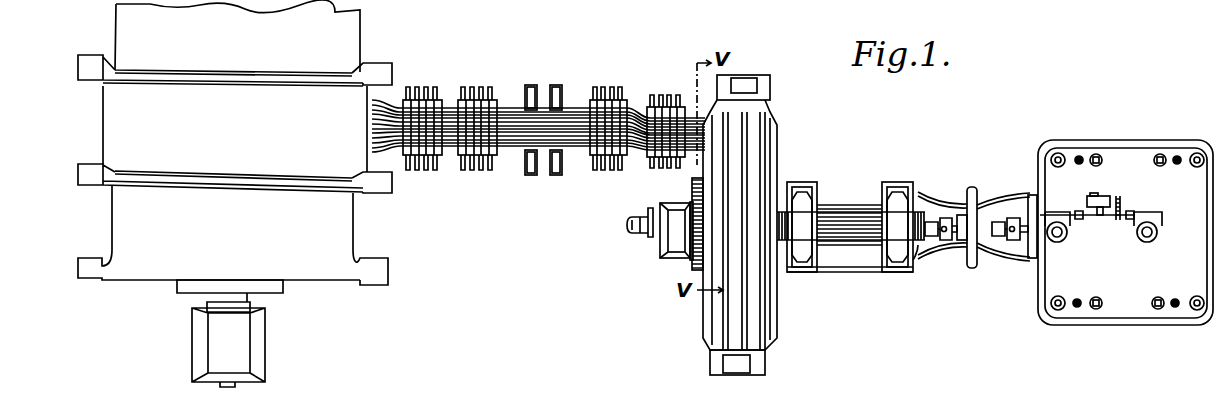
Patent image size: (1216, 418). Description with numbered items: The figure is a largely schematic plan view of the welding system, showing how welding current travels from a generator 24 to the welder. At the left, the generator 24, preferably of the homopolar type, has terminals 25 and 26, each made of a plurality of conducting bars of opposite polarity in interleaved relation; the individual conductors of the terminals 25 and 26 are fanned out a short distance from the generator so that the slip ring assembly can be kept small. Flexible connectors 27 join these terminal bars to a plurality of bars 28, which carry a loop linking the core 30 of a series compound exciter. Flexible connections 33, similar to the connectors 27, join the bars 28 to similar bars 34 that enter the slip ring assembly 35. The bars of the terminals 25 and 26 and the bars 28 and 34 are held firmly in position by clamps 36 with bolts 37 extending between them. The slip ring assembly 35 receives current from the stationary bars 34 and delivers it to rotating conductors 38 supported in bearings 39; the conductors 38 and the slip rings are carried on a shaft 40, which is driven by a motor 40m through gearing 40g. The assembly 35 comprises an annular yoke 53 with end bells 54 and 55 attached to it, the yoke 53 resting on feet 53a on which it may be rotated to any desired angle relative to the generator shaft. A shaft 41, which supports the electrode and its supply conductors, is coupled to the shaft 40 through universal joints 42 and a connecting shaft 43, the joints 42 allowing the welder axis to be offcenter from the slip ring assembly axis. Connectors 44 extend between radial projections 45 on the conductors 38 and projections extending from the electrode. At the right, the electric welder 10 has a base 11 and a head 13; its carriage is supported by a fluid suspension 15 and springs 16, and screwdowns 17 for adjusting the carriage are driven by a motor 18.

The electric welder 10 is at (1066, 126).
The base 11 is at (1174, 136).
The head 13 is at (1110, 153).
The fluid suspension 15 is at (1153, 160).
The springs 16 is at (1078, 165).
The screwdowns 17 is at (1068, 233).
The motor 18 is at (1102, 195).
The generator 24 is at (338, 24).
The generator terminal 25 is at (373, 115).
The generator terminal 26 is at (373, 172).
The flexible connectors 27 is at (448, 110).
The bars 28 is at (512, 117).
The core 30 is at (538, 102).
The flexible connections 33 is at (637, 108).
The bars 34 is at (672, 112).
The slip ring assembly 35 is at (760, 147).
The clamps 36 is at (438, 163).
The bolts 37 is at (485, 167).
The rotating conductors 38 is at (843, 207).
The bearings 39 is at (883, 260).
The shaft 40 is at (690, 230).
The motor 40m is at (630, 225).
The gearing 40g is at (690, 267).
The shaft 41 is at (1027, 243).
The universal joints 42 is at (933, 218).
The connecting shaft 43 is at (965, 213).
The connectors 44 is at (988, 203).
The radial projections 45 is at (927, 257).
The annular yoke 53 is at (747, 320).
The feet 53a is at (767, 83).
The end bell 54 is at (703, 313).
The end bell 55 is at (770, 302).